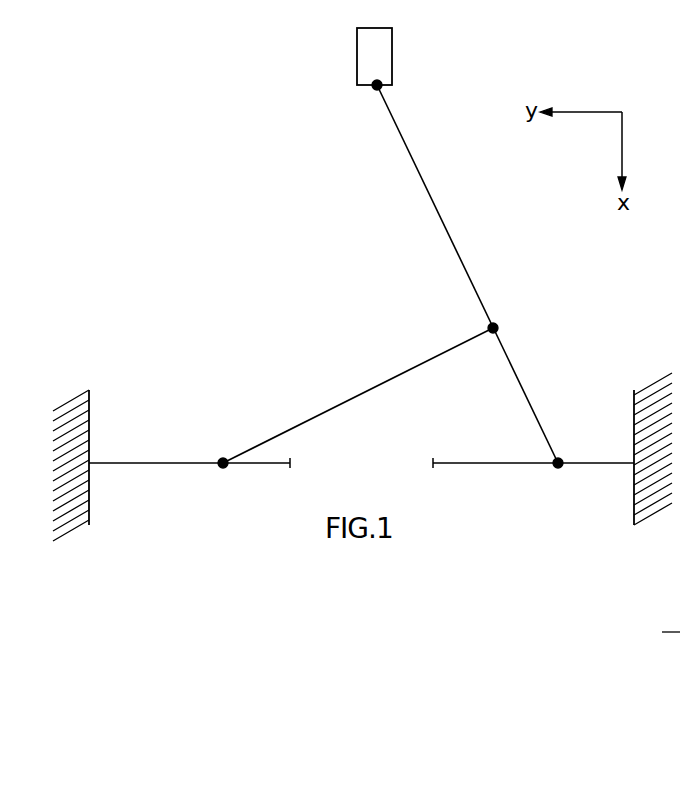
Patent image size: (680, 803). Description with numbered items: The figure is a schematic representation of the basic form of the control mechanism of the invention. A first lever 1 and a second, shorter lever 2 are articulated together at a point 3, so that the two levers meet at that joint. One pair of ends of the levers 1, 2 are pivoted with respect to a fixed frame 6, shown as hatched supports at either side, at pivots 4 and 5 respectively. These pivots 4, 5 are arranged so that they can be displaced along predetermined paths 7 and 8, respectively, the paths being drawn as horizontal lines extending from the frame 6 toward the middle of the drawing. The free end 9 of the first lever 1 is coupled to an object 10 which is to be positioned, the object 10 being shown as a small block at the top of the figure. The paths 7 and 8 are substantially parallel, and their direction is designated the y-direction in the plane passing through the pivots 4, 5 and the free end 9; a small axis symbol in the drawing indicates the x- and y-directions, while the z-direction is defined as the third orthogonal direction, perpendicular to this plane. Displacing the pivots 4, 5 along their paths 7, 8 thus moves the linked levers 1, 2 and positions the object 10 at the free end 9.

The first lever 1 is at (445, 217).
The second lever 2 is at (362, 392).
The point 3 is at (502, 327).
The pivot 4 is at (566, 449).
The pivot 5 is at (217, 449).
The fixed frame 6 is at (80, 485).
The path 7 is at (535, 465).
The path 8 is at (153, 463).
The free end 9 is at (370, 98).
The object 10 is at (386, 53).